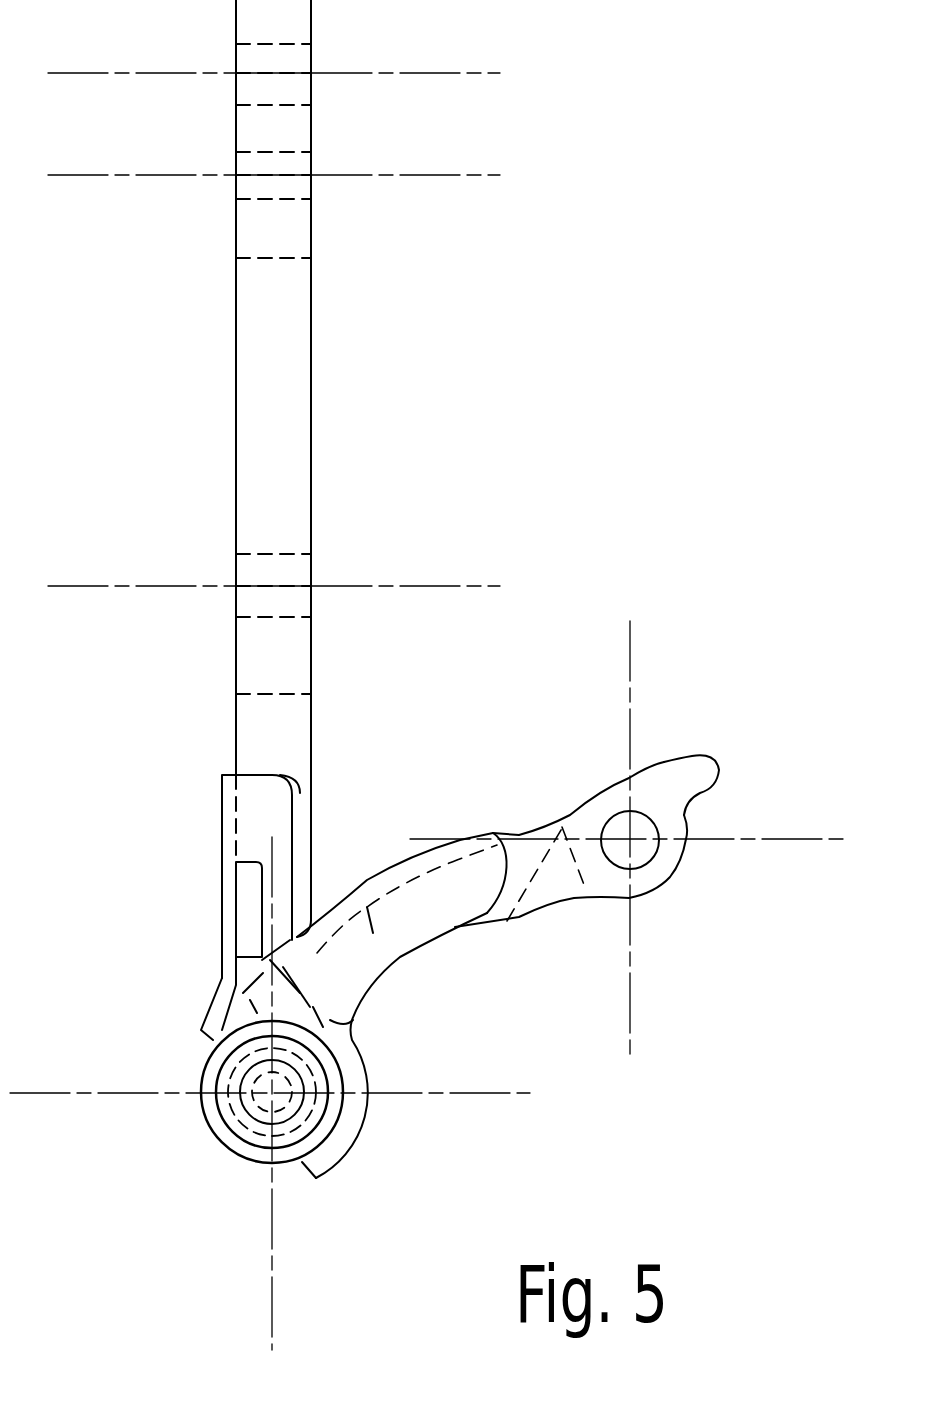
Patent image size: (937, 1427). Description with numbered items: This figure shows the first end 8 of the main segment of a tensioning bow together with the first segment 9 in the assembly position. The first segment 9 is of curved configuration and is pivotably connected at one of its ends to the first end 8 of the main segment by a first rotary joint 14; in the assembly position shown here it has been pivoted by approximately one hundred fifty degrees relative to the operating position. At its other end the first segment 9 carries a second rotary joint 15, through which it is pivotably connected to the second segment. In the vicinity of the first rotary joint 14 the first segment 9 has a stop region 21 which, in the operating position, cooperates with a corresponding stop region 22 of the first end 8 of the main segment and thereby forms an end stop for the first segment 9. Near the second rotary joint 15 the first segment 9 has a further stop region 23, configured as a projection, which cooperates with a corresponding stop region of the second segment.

The first end 8 is at (280, 383).
The first segment 9 is at (468, 878).
The first rotary joint 14 is at (272, 1092).
The second rotary joint 15 is at (636, 848).
The stop region 21 is at (305, 1173).
The stop region 22 is at (200, 1033).
The stop region 23 is at (705, 754).